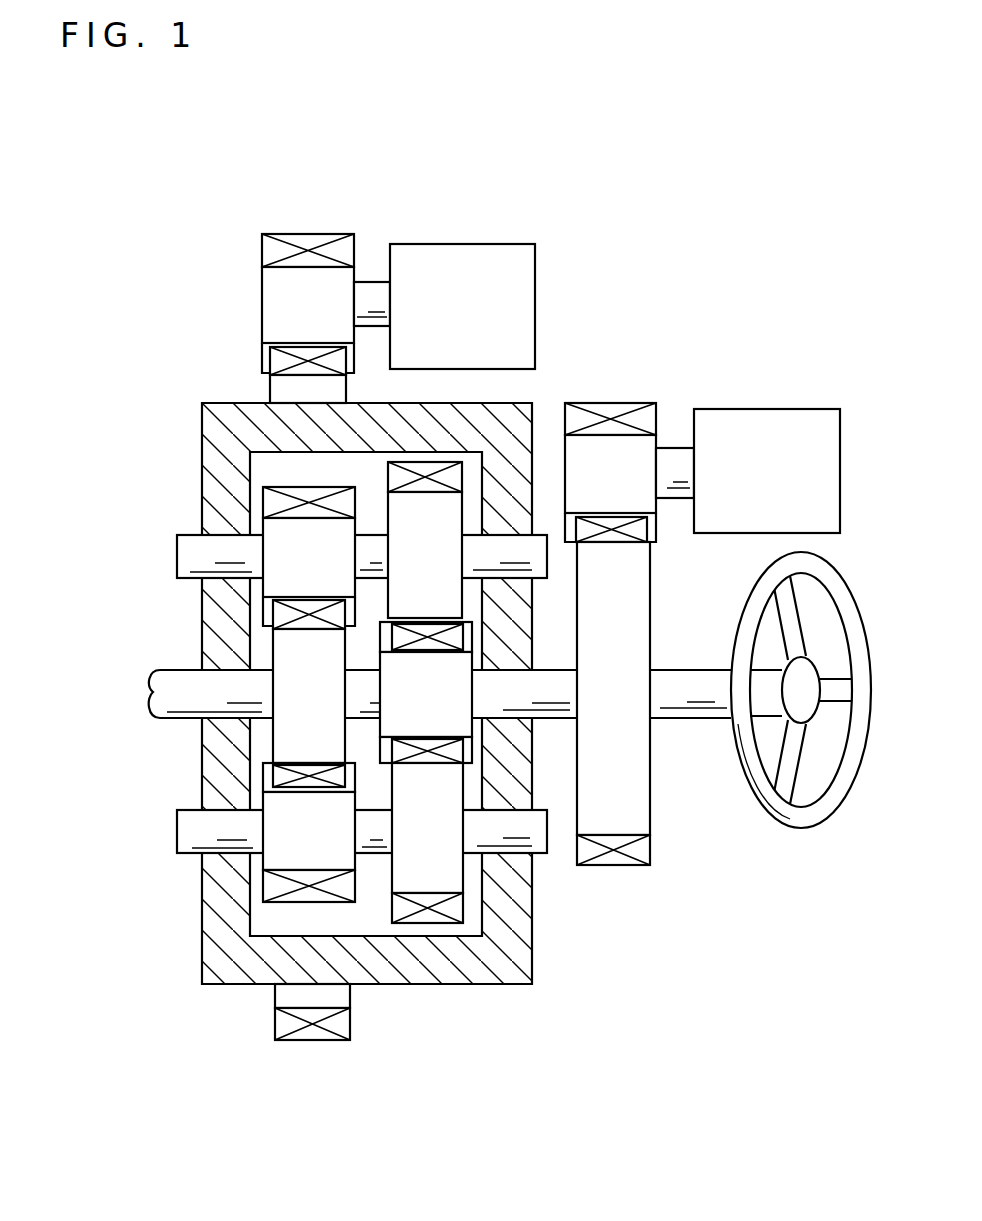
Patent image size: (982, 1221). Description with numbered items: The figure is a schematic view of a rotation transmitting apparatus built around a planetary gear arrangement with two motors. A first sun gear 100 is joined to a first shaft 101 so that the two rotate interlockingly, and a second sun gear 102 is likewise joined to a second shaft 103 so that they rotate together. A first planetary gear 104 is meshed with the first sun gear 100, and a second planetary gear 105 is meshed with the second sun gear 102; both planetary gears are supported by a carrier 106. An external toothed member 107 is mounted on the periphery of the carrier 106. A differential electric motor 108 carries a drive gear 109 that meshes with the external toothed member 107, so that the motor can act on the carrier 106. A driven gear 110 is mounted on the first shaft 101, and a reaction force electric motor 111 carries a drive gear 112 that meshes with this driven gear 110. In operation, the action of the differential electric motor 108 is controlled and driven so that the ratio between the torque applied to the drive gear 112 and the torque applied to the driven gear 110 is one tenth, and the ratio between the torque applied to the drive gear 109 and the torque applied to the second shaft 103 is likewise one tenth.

The first sun gear 100 is at (472, 722).
The first shaft 101 is at (700, 717).
The second sun gear 102 is at (275, 735).
The second shaft 103 is at (173, 673).
The first planetary gear 104 is at (433, 920).
The second planetary gear 105 is at (290, 900).
The carrier 106 is at (528, 939).
The external toothed member 107 is at (313, 1040).
The differential electric motor 108 is at (463, 244).
The drive gear 109 is at (262, 248).
The driven gear 110 is at (647, 578).
The reaction force electric motor 111 is at (763, 409).
The drive gear 112 is at (610, 403).